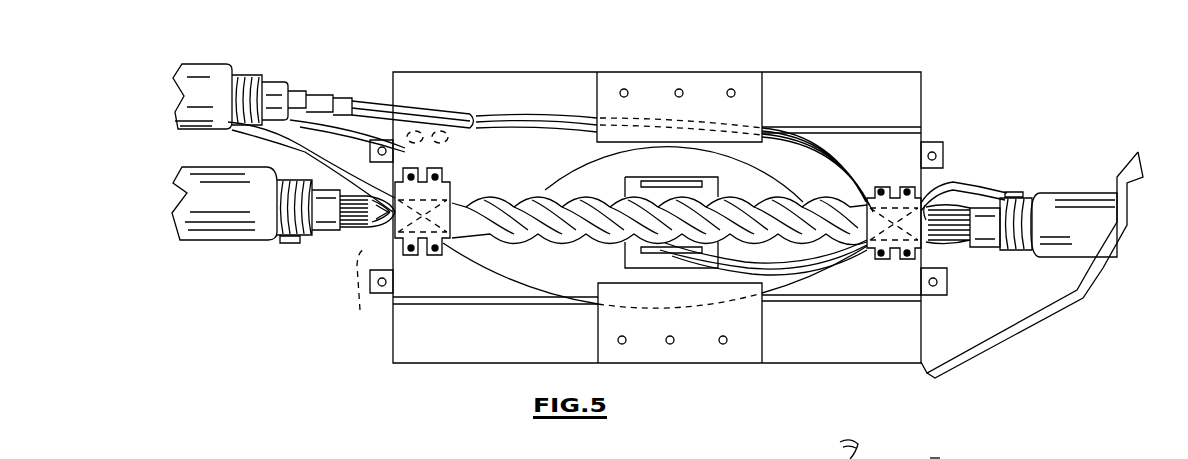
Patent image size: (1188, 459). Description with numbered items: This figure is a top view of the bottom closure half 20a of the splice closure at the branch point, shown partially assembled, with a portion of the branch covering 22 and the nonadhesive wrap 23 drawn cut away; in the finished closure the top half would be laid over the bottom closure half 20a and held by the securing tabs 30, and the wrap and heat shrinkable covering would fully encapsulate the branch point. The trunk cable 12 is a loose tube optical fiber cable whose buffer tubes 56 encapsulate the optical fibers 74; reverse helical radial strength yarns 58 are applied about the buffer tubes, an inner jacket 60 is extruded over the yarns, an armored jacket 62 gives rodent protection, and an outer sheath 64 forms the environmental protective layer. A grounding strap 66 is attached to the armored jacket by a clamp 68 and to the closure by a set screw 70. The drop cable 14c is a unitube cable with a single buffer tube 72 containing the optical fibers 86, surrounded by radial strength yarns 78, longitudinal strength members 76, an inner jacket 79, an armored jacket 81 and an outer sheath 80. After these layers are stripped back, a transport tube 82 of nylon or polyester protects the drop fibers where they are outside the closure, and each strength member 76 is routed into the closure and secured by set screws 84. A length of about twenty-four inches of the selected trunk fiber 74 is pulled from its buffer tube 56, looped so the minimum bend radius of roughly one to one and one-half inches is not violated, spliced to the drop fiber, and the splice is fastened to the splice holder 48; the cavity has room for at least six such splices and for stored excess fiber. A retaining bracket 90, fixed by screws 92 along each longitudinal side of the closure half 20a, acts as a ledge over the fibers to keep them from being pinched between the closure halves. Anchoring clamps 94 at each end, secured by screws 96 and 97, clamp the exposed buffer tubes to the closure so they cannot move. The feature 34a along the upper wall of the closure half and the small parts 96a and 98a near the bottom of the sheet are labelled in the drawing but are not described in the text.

The trunk cable 12 is at (644, 236).
The connector 14c is at (170, 87).
The bottom closure half 20a is at (867, 72).
The branch covering 22 is at (1032, 281).
The nonadhesive wrap 23 is at (967, 350).
The securing tabs 30 is at (936, 142).
The housing rail 34a is at (903, 128).
The splice holder 48 is at (697, 243).
The buffer tubes 56 is at (506, 238).
The radial strength yarns 58 is at (350, 230).
The inner jacket 60 is at (349, 232).
The armored jacket 62 is at (277, 237).
The outer sheath 64 is at (243, 245).
The grounding strap 66 is at (321, 227).
The clamp 68 is at (283, 243).
The set screw 70 is at (363, 300).
The buffer tube 72 is at (313, 100).
The optical fibers 74 is at (778, 172).
The strength members 76 is at (312, 125).
The radial strength yarns 78 is at (289, 93).
The inner jacket 79 is at (279, 84).
The outer sheath 80 is at (217, 63).
The armored jacket 81 is at (257, 76).
The transport tube 82 is at (373, 108).
The set screws 84 is at (425, 131).
The optical fibers 86 is at (402, 140).
The retaining bracket 90 is at (746, 80).
The screws 92 is at (731, 89).
The anchoring clamps 94 is at (450, 186).
The screws 96 is at (440, 250).
The screws 97 is at (412, 250).
The terminal 96a is at (840, 445).
The terminal 98a is at (923, 452).